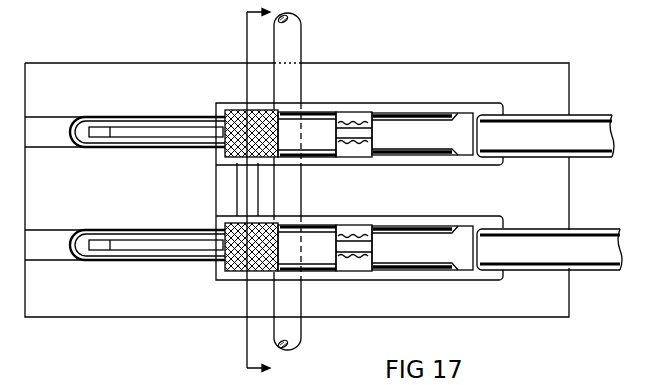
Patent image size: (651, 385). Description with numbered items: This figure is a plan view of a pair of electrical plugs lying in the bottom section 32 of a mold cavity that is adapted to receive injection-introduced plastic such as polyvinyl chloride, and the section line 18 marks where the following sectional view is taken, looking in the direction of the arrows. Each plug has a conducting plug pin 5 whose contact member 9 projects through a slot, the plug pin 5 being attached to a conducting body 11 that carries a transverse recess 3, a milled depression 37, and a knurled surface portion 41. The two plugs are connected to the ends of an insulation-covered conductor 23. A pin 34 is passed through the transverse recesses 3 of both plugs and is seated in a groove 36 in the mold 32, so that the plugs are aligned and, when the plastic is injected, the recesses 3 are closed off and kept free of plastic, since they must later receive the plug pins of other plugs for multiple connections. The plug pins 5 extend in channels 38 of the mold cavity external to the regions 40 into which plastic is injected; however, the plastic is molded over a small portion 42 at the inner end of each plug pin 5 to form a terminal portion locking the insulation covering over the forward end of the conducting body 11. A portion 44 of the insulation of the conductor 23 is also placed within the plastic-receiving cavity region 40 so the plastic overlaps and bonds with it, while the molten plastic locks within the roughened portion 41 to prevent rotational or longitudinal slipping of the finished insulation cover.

The transverse recess 3 is at (302, 110).
The plug pin 5 is at (147, 116).
The contact member 9 is at (147, 134).
The conducting body 11 is at (390, 158).
The section line 18 is at (261, 192).
The insulation-covered conductor 23 is at (590, 115).
The bottom section of mold cavity 32 is at (540, 318).
The pin 34 is at (293, 42).
The groove 36 is at (304, 63).
The depression 37 is at (355, 120).
The channel 38 is at (64, 125).
The plastic-receiving cavity region 40 is at (237, 103).
The knurled surface portion 41 is at (257, 110).
The inner end portion of plug pin 42 is at (213, 102).
The insulation portion of conductor 44 is at (500, 115).